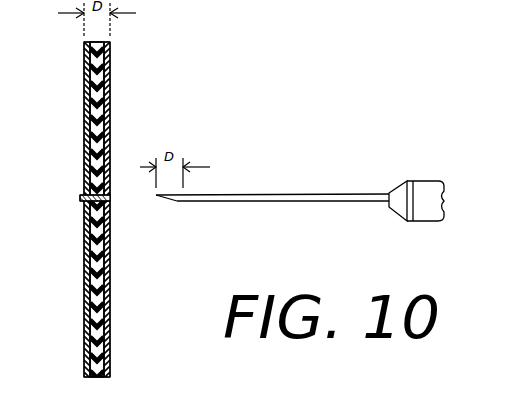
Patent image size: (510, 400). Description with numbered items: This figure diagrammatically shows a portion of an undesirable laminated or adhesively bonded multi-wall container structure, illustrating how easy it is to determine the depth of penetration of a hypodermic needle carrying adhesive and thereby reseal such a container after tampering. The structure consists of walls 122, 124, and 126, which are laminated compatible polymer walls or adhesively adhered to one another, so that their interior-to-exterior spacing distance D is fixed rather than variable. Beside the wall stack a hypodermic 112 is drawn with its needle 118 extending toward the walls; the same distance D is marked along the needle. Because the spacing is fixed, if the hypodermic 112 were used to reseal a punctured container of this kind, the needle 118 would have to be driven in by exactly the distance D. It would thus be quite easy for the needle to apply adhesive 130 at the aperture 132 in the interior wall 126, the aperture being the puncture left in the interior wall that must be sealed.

The hypodermic 112 is at (428, 181).
The needle 118 is at (272, 213).
The wall 122 is at (110, 88).
The wall 124 is at (108, 70).
The interior wall 126 is at (84, 88).
The adhesive 130 is at (84, 200).
The aperture 132 is at (84, 195).